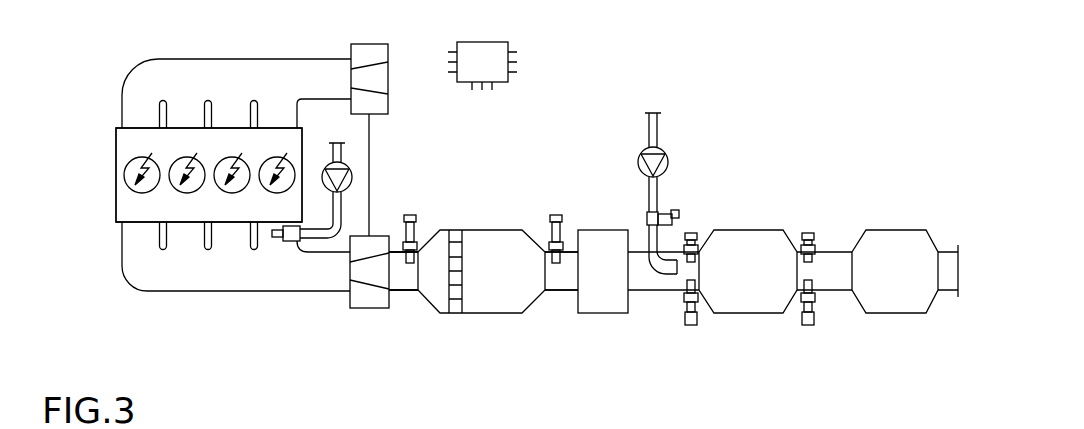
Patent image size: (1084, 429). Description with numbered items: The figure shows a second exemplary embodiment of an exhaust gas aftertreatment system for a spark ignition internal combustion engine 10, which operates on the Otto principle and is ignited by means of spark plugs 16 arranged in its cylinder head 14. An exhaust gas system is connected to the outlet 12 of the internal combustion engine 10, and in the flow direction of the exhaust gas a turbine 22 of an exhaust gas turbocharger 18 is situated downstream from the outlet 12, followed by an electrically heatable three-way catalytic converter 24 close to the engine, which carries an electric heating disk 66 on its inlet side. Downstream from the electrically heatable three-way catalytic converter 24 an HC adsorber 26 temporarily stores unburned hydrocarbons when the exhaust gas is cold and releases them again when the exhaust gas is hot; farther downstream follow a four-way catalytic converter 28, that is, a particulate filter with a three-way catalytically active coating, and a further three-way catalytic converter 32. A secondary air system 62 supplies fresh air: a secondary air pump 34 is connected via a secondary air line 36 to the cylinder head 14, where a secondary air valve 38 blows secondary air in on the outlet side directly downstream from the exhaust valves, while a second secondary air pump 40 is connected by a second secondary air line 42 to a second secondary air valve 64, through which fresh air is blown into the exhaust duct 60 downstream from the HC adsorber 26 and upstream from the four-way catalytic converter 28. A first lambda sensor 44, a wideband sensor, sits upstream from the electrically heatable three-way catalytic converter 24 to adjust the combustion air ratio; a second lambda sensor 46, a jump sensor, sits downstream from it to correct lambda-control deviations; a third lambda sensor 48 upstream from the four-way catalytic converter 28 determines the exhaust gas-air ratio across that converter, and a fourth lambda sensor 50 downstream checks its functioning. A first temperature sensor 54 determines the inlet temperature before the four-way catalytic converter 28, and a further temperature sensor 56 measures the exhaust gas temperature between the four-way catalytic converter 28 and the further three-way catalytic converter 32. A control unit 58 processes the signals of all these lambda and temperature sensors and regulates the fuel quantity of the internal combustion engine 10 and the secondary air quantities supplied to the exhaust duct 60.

The internal combustion engine 10 is at (116, 137).
The outlet 12 is at (151, 265).
The cylinder head 14 is at (124, 210).
The spark plugs 16 is at (146, 166).
The exhaust gas turbocharger 18 is at (369, 137).
The turbine 22 is at (371, 298).
The electrically heatable three-way catalytic converter 24 is at (505, 301).
The HC adsorber 26 is at (603, 302).
The four-way catalytic converter 28 is at (750, 300).
The further three-way catalytic converter 32 is at (896, 300).
The secondary air pump 34 is at (349, 172).
The secondary air line 36 is at (337, 205).
The secondary air valve 38 is at (303, 241).
The second secondary air pump 40 is at (641, 155).
The second secondary air line 42 is at (652, 193).
The first lambda sensor 44 is at (414, 225).
The second lambda sensor 46 is at (547, 222).
The third lambda sensor 48 is at (690, 318).
The fourth lambda sensor 50 is at (808, 318).
The first temperature sensor 54 is at (690, 240).
The further temperature sensor 56 is at (812, 241).
The control unit 58 is at (487, 42).
The exhaust duct 60 is at (407, 272).
The secondary air system 62 is at (767, 122).
The second secondary air valve 64 is at (674, 212).
The electric heating disk 66 is at (456, 300).